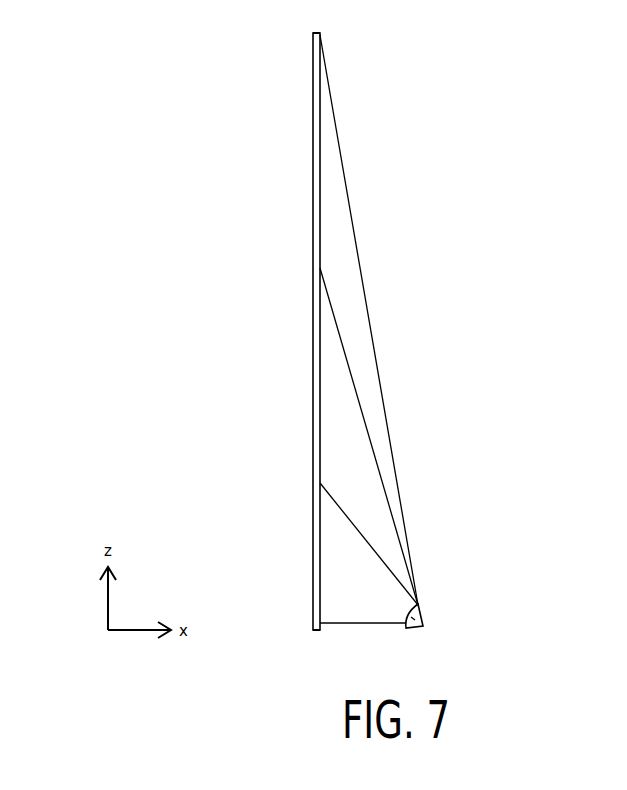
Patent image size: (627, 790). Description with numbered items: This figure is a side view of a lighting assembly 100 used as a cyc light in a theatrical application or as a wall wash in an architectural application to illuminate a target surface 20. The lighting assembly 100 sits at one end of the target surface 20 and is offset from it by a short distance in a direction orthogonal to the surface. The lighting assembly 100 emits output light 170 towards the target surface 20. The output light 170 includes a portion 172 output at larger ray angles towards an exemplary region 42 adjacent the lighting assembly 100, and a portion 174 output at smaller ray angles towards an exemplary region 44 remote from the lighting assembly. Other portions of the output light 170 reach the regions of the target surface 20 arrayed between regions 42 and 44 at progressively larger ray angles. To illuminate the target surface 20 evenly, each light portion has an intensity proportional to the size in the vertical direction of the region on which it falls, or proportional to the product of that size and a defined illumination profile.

The target surface 20 is at (313, 408).
The exemplary region 44 is at (313, 170).
The exemplary region 42 is at (313, 578).
The portion of output light 174 is at (355, 288).
The output light 170 is at (401, 474).
The portion of output light 172 is at (373, 604).
The lighting assembly 100 is at (427, 623).